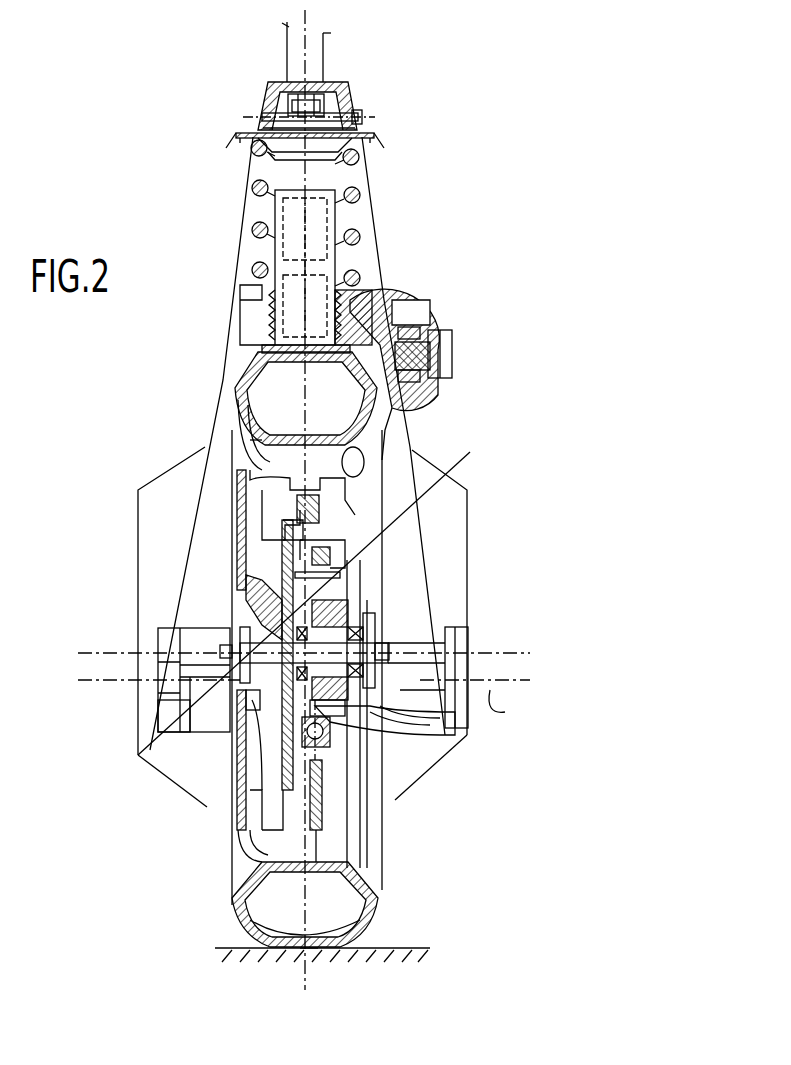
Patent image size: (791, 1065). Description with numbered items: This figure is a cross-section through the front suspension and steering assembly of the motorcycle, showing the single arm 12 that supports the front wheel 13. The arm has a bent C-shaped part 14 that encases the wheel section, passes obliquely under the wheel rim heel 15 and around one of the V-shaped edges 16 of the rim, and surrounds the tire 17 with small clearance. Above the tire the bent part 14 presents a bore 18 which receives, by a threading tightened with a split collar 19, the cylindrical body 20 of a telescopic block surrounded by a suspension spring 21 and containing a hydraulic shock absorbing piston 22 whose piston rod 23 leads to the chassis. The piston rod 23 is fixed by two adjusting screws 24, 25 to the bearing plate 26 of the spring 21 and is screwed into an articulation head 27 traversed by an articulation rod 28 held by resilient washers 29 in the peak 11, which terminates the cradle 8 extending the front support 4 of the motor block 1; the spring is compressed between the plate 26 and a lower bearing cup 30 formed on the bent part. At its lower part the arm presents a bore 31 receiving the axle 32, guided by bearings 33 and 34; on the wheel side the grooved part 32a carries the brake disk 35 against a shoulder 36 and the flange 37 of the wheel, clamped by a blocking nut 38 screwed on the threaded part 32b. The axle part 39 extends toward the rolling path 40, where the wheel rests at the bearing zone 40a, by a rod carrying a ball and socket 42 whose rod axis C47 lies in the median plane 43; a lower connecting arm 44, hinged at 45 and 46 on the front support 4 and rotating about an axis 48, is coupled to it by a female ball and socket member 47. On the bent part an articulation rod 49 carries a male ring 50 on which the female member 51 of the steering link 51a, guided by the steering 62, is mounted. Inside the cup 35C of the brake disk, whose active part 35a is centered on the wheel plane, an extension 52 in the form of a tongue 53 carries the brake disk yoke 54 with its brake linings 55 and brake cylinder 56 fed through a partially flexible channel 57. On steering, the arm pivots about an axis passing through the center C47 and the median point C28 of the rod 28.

The motor block 1 is at (170, 471).
The front support 4 is at (180, 656).
The cradle 8 is at (235, 374).
The peak 11 is at (272, 84).
The single arm 12 is at (405, 300).
The front wheel 13 is at (245, 861).
The bent C-shaped part 14 is at (418, 399).
The wheel rim heel 15 is at (367, 851).
The V-shaped edge of the wheel rim 16 is at (360, 878).
The tire 17 is at (355, 929).
The bore 18 is at (245, 330).
The split collar 19 is at (262, 300).
The cylindrical body 20 is at (265, 330).
The suspension spring 21 is at (360, 227).
The hydraulic shock absorbing piston 22 is at (300, 270).
The piston rod 23 is at (368, 172).
The adjusting screw 24 is at (295, 160).
The adjusting screw 25 is at (262, 117).
The bearing plate 26 is at (232, 140).
The articulation head 27 is at (338, 82).
The articulation rod 28 is at (362, 122).
The resilient washers 29 is at (292, 104).
The lower bearing cup 30 is at (365, 290).
The bore 31 is at (385, 641).
The axle 32 is at (380, 641).
The grooved part 32a is at (240, 701).
The threaded part 32b is at (220, 651).
The bearing 33 is at (365, 631).
The bearing 34 is at (355, 586).
The brake disk 35 is at (282, 584).
The active part of the brake disk 35a is at (262, 826).
The cup of the brake disk 35C is at (280, 546).
The shoulder 36 is at (150, 756).
The flange 37 is at (262, 801).
The blocking nut 38 is at (255, 616).
The axle part 39 is at (420, 652).
The rolling path 40 is at (395, 948).
The bearing zone 40a is at (312, 949).
The ball and socket 42 is at (400, 766).
The median plane 43 is at (325, 829).
The lower steering or connecting arm 44 is at (445, 729).
The hinge 45 is at (460, 661).
The hinge 46 is at (170, 701).
The female ball and socket articulation member 47 is at (265, 766).
The axis of articulation 48 is at (514, 708).
The articulation rod 49 is at (452, 353).
The male annular ball and socket joint member 50 is at (452, 338).
The female ball and socket joint member 51 is at (440, 384).
The steering link 51a is at (418, 322).
The extension 52 is at (295, 575).
The tongue 53 is at (355, 521).
The brake disk yoke 54 is at (317, 598).
The brake linings 55 is at (365, 471).
The brake cylinder 56 is at (250, 423).
The partially flexible channel 57 is at (265, 500).
The steering 62 is at (290, 56).
The median point of the rod C28 is at (324, 100).
The center of articulation C47 is at (380, 811).